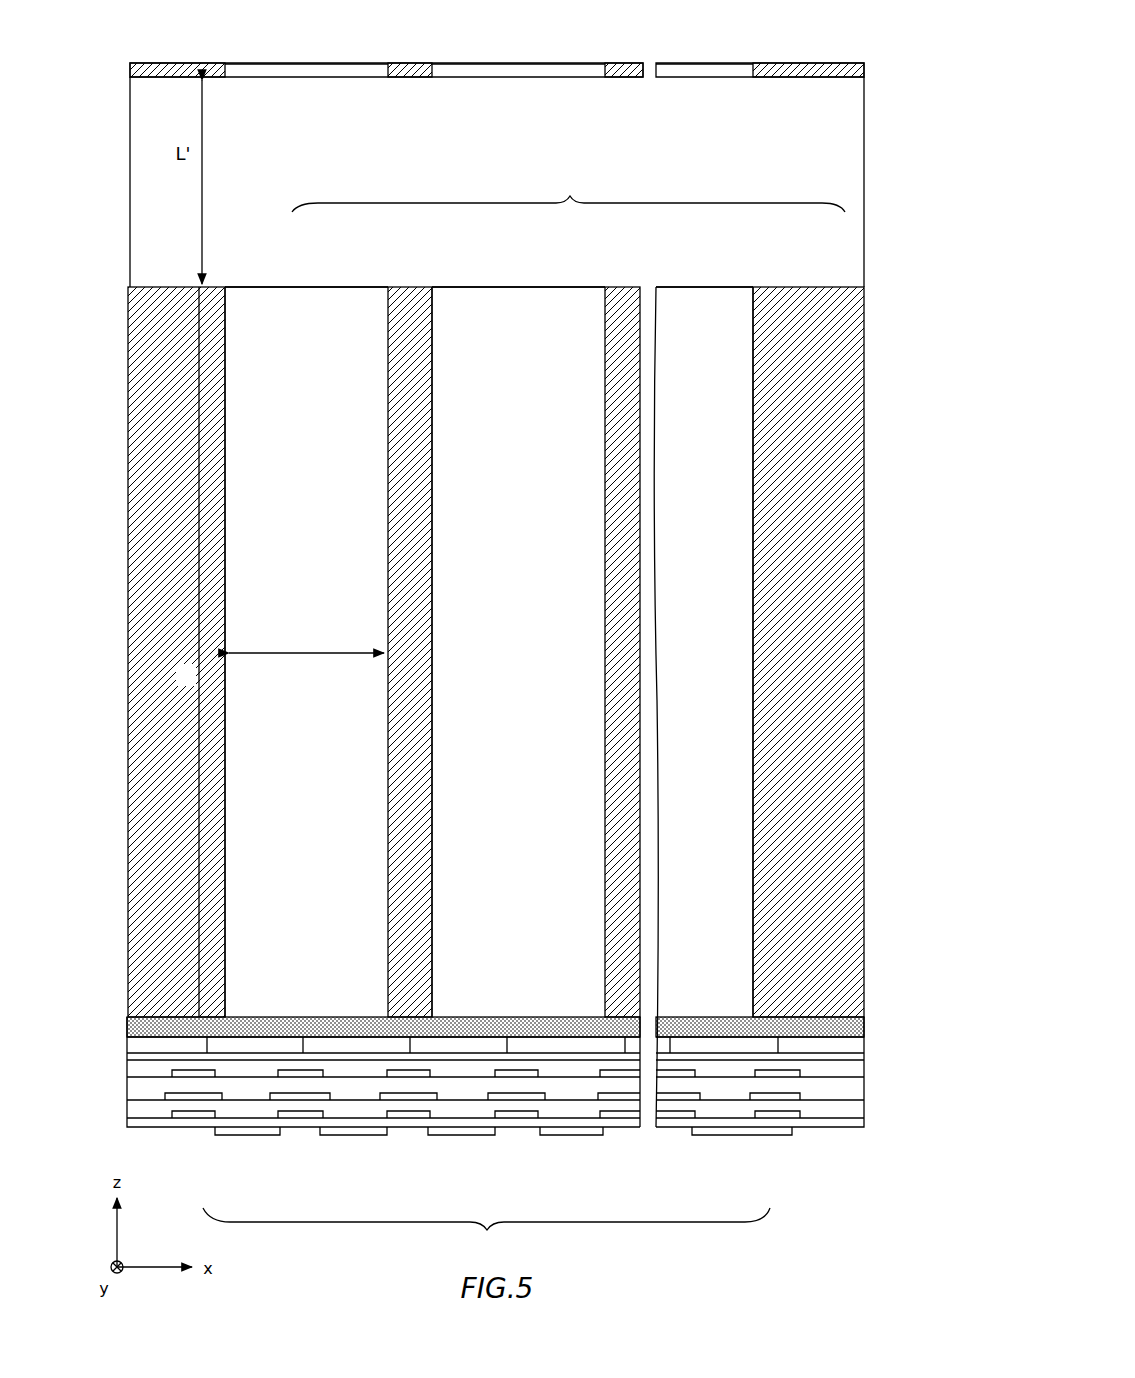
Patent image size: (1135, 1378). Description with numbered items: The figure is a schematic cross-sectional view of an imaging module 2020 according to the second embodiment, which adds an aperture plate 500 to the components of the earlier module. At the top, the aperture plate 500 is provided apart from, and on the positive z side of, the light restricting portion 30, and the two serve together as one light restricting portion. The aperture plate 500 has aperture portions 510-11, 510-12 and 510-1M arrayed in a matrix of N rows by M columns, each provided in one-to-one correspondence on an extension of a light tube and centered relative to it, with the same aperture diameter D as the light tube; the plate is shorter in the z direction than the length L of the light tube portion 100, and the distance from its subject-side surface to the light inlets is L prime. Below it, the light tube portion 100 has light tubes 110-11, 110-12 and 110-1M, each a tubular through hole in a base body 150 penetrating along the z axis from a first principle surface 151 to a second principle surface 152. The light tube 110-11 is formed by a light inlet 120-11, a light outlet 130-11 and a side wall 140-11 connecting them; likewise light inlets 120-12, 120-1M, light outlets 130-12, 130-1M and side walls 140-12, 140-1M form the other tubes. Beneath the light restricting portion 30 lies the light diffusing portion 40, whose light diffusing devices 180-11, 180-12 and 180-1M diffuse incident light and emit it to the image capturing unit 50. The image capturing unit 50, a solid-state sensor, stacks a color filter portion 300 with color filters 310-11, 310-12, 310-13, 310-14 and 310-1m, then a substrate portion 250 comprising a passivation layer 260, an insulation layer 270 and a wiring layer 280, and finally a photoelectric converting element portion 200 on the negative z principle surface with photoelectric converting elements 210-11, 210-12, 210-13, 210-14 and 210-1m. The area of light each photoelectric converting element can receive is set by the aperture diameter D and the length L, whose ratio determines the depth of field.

The imaging module 2020 is at (487, 37).
The aperture plate 500 is at (866, 63).
The aperture portion 510-11 is at (338, 82).
The aperture portion 510-12 is at (548, 82).
The aperture portion 510-1M is at (737, 82).
The light tube portion 100 is at (568, 185).
The light tube 110-11 is at (348, 285).
The light tube 110-12 is at (558, 285).
The light tube 110-1M is at (746, 285).
The light inlet 120-11 is at (296, 293).
The light inlet 120-12 is at (505, 293).
The light inlet 120-1M is at (700, 293).
The light outlet 130-11 is at (298, 1037).
The light outlet 130-12 is at (513, 1022).
The light outlet 130-1M is at (672, 1013).
The side wall 140-11 is at (226, 494).
The side wall 140-12 is at (433, 494).
The side wall 140-1M is at (752, 536).
The base body 150 is at (865, 590).
The first principle surface 151 is at (783, 287).
The second principle surface 152 is at (850, 985).
The light restricting portion 30 is at (495, 676).
The light diffusing portion 40 is at (498, 1016).
The color filter portion 300 is at (864, 1030).
The color filter 310-11 is at (240, 1040).
The color filter 310-12 is at (326, 1040).
The color filter 310-13 is at (446, 1040).
The color filter 310-14 is at (541, 1040).
The color filter 310-1m is at (714, 1040).
The image capturing unit 50 is at (498, 1072).
The passivation layer 260 is at (865, 1057).
The insulation layer 270 is at (864, 1068).
The wiring layer 280 is at (798, 1078).
The substrate portion 250 is at (794, 1136).
The light diffusing device 180-11 is at (297, 1040).
The light diffusing device 180-12 is at (513, 1040).
The light diffusing device 180-1M is at (680, 1040).
The photoelectric converting element portion 200 is at (486, 1234).
The photoelectric converting element 210-11 is at (243, 1135).
The photoelectric converting element 210-12 is at (357, 1135).
The photoelectric converting element 210-13 is at (463, 1135).
The photoelectric converting element 210-14 is at (575, 1135).
The photoelectric converting element 210-1m is at (735, 1135).